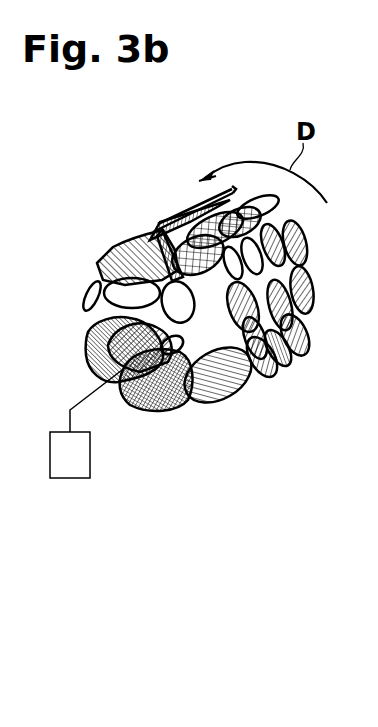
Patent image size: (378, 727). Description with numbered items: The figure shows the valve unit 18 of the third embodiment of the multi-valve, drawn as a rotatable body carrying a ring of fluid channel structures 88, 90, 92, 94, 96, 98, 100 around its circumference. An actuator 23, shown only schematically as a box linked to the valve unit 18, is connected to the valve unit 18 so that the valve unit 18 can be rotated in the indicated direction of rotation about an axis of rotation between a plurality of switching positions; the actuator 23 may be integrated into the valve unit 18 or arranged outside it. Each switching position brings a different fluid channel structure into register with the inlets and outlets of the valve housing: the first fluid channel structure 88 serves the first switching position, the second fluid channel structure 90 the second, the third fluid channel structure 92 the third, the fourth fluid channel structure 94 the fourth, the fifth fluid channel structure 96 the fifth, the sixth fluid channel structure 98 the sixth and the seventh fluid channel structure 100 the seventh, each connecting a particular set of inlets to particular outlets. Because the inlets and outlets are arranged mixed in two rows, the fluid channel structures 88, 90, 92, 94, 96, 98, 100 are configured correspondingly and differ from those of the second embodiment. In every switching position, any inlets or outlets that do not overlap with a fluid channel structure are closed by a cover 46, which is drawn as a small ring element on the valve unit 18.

The valve unit 18 is at (328, 231).
The actuator 23 is at (68, 482).
The cover 46 is at (86, 297).
The first fluid channel structure 88 is at (148, 405).
The second fluid channel structure 90 is at (95, 360).
The third fluid channel structure 92 is at (105, 256).
The fourth fluid channel structure 94 is at (147, 238).
The fifth fluid channel structure 96 is at (228, 200).
The sixth fluid channel structure 98 is at (289, 355).
The seventh fluid channel structure 100 is at (224, 393).